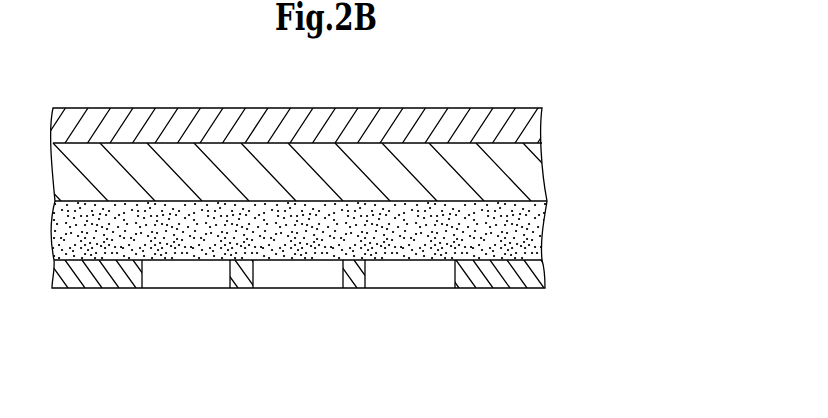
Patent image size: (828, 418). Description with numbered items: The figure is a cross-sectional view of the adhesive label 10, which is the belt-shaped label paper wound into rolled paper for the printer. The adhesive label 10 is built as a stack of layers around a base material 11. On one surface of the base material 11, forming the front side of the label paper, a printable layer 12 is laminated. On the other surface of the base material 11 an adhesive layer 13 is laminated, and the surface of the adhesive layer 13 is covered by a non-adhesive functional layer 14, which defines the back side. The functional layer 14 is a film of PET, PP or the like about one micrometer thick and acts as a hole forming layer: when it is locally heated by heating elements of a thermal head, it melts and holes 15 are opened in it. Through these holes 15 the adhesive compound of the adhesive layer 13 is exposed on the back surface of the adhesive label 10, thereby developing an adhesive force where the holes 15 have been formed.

The adhesive label 10 is at (623, 70).
The base material 11 is at (530, 167).
The printable layer 12 is at (537, 122).
The adhesive layer 13 is at (532, 230).
The functional layer 14 is at (533, 268).
The holes 15 is at (187, 273).